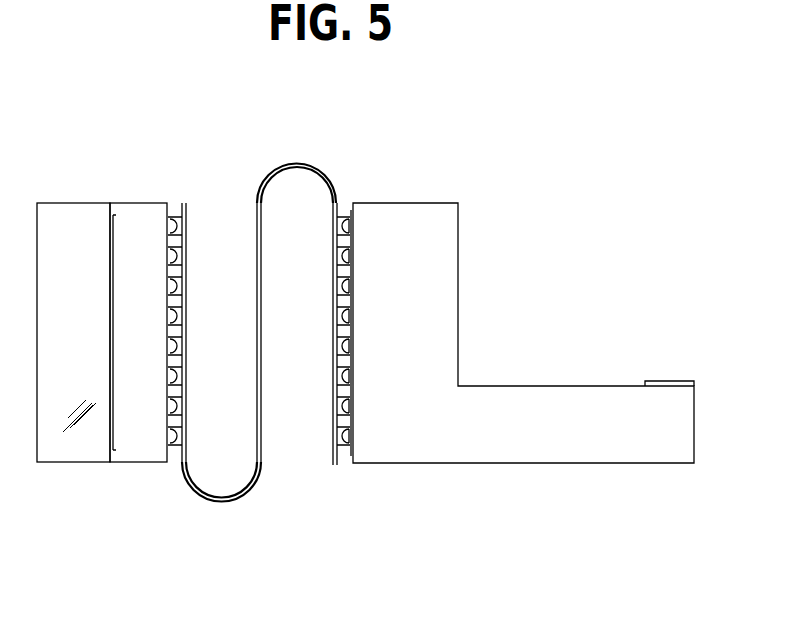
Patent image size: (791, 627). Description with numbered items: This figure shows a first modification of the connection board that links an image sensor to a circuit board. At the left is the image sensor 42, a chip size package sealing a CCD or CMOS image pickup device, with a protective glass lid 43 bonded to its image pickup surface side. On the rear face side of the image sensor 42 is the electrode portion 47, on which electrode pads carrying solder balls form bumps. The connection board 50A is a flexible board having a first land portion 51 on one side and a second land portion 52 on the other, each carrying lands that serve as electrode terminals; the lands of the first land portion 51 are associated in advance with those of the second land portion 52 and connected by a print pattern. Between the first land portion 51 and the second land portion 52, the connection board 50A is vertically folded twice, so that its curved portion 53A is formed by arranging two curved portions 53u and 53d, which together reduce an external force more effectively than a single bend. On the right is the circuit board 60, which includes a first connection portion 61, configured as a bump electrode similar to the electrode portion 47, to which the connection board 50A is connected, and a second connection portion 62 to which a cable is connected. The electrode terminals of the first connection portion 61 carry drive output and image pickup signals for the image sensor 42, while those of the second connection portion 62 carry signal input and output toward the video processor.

The glass lid 43 is at (77, 203).
The image sensor 42 is at (137, 203).
The electrode portion 47 is at (170, 197).
The first land portion 51 is at (184, 197).
The connection board 50A is at (234, 198).
The curved portion 53u is at (297, 163).
The second land portion 52 is at (337, 195).
The first connection portion 61 is at (353, 195).
The circuit board 60 is at (422, 192).
The second connection portion 62 is at (667, 369).
The curved portion 53d is at (217, 503).
The curved portion 53A is at (286, 493).